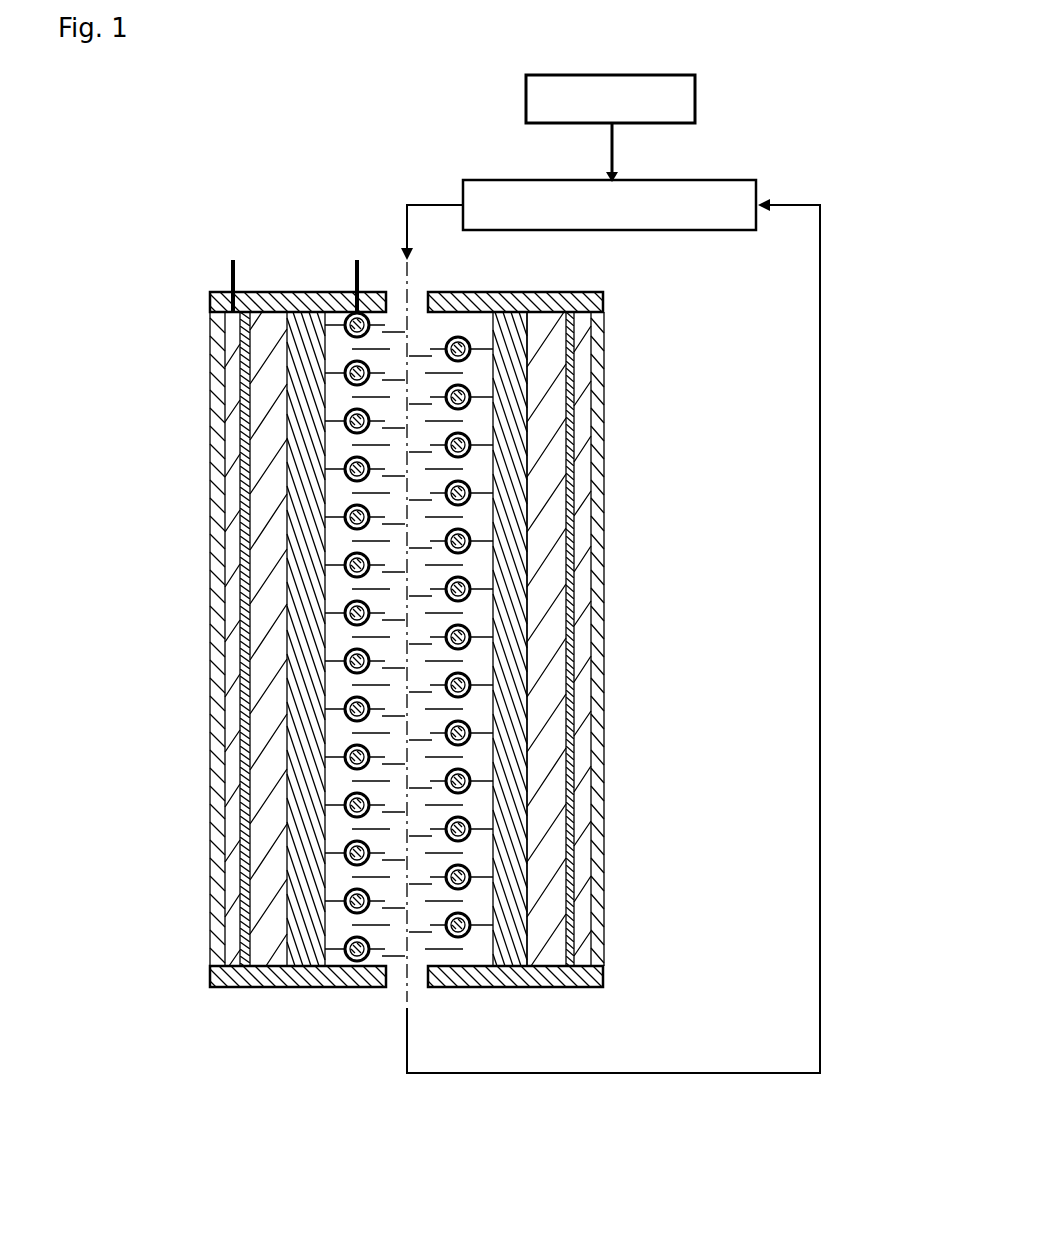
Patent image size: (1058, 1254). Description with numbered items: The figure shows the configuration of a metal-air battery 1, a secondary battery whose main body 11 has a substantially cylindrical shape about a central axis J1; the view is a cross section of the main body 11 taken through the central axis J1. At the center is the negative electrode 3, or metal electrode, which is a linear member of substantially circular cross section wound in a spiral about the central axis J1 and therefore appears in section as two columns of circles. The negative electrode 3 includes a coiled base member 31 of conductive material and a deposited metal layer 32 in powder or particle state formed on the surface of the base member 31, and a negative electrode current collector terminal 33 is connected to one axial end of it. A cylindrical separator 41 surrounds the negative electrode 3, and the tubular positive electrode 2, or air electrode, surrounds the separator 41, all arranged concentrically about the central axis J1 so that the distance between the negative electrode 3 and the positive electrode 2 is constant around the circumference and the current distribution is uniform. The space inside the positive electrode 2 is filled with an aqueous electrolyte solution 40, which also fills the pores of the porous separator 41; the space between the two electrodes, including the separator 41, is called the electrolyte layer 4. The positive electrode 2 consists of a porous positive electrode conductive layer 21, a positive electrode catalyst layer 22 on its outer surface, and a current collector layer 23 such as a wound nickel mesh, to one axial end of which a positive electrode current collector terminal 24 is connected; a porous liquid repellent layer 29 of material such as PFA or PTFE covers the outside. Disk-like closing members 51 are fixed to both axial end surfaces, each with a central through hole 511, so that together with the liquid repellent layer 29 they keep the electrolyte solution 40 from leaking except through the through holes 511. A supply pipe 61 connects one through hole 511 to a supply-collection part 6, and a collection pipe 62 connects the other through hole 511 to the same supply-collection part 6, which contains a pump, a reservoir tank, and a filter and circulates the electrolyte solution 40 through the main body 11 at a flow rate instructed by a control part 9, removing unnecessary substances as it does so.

The metal-air battery 1 is at (246, 141).
The main body 11 is at (412, 572).
The positive electrode 2 is at (631, 639).
The positive electrode conductive layer 21 is at (545, 503).
The positive electrode catalyst layer 22 is at (571, 535).
The current collector layer 23 is at (583, 550).
The positive electrode current collector terminal 24 is at (229, 278).
The liquid repellent layer 29 is at (600, 584).
The negative electrode 3 is at (521, 608).
The base member 31 is at (462, 400).
The deposited metal layer 32 is at (470, 393).
The negative electrode current collector terminal 33 is at (353, 278).
The electrolyte layer 4 is at (574, 607).
The electrolyte solution 40 is at (432, 470).
The separator 41 is at (510, 480).
The closing members 51 is at (585, 300).
The through hole 511 is at (428, 283).
The supply-collection part 6 is at (675, 180).
The supply pipe 61 is at (430, 205).
The collection pipe 62 is at (555, 1075).
The control part 9 is at (695, 98).
The central axis J1 is at (405, 277).